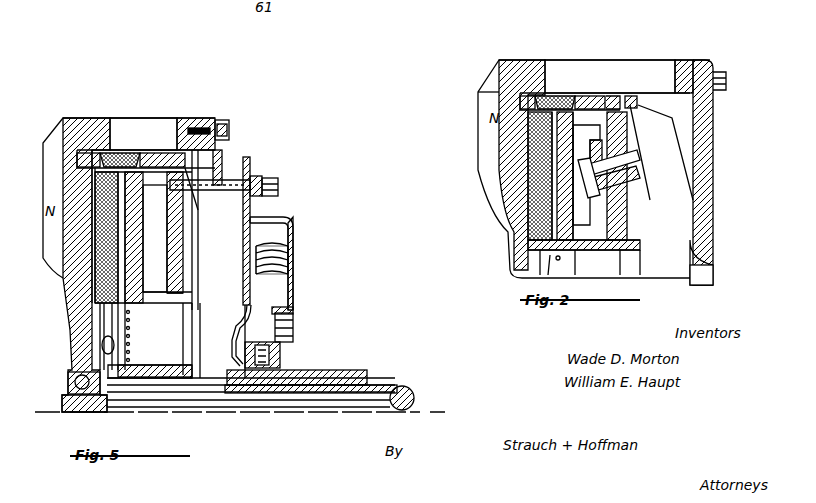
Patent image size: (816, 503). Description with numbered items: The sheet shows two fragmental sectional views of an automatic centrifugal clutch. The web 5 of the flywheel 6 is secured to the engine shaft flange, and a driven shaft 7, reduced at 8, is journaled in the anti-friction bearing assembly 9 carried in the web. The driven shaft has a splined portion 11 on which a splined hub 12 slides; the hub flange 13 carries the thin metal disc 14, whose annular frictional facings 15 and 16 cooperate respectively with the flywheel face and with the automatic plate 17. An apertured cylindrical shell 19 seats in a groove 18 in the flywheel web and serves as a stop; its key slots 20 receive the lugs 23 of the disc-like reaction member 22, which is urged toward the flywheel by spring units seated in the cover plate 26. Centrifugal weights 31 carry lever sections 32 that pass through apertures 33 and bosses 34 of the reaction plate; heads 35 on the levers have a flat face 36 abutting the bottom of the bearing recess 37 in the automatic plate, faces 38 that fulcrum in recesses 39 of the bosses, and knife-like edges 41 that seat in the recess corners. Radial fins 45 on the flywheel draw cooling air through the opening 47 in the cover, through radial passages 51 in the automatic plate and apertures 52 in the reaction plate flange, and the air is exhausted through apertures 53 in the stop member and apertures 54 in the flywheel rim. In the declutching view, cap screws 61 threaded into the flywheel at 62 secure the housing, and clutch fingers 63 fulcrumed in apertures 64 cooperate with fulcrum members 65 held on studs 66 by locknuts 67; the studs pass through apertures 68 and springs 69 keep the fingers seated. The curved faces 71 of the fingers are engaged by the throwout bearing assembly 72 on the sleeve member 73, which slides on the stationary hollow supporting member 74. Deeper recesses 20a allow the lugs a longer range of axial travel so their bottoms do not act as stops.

In FIG. 5, the web 5 is at (75, 258).
In FIG. 2, the web 5 is at (506, 235).
In FIG. 5, the flywheel 6 is at (80, 120).
In FIG. 2, the flywheel 6 is at (522, 76).
In FIG. 5, the driven shaft 7 is at (300, 405).
In FIG. 5, the reduced portion 8 is at (92, 403).
In FIG. 5, the anti-friction bearing assembly 9 is at (76, 382).
In FIG. 5, the splined portion 11 is at (195, 403).
In FIG. 5, the hub 12 is at (160, 367).
In FIG. 5, the flange 13 is at (116, 343).
In FIG. 5, the disc 14 is at (100, 188).
In FIG. 2, the disc 14 is at (520, 215).
In FIG. 5, the frictional facing 15 is at (100, 213).
In FIG. 2, the frictional facing 15 is at (530, 126).
In FIG. 5, the frictional facing 16 is at (100, 232).
In FIG. 2, the frictional facing 16 is at (540, 142).
In FIG. 5, the automatic plate 17 is at (128, 307).
In FIG. 5, the groove 18 is at (66, 153).
In FIG. 2, the groove 18 is at (520, 99).
In FIG. 5, the shell 19 is at (76, 163).
In FIG. 2, the shell 19 is at (520, 108).
In FIG. 2, the key slots 20 is at (604, 97).
In FIG. 5, the recesses 20a is at (160, 150).
In FIG. 5, the reaction member 22 is at (183, 300).
In FIG. 5, the lugs 23 is at (180, 132).
In FIG. 2, the lugs 23 is at (625, 93).
In FIG. 2, the cover plate 26 is at (705, 185).
In FIG. 2, the centrifugal weights 31 is at (700, 125).
In FIG. 2, the lever sections 32 is at (636, 160).
In FIG. 2, the apertures 33 is at (630, 178).
In FIG. 2, the bosses 34 is at (612, 133).
In FIG. 2, the heads 35 is at (545, 170).
In FIG. 2, the flat face 36 is at (528, 188).
In FIG. 2, the bearing recess 37 is at (528, 203).
In FIG. 2, the faces 38 is at (622, 193).
In FIG. 2, the recesses 39 is at (590, 250).
In FIG. 2, the knife-like edges 41 is at (528, 158).
In FIG. 2, the radial fins 45 is at (496, 92).
In FIG. 2, the opening 47 is at (712, 265).
In FIG. 5, the radial passages 51 is at (155, 238).
In FIG. 2, the radial passages 51 is at (565, 267).
In FIG. 5, the apertures 52 is at (200, 185).
In FIG. 2, the apertures 52 is at (640, 100).
In FIG. 5, the apertures 53 is at (120, 158).
In FIG. 2, the apertures 53 is at (552, 100).
In FIG. 5, the apertures 54 is at (118, 130).
In FIG. 2, the apertures 54 is at (600, 75).
In FIG. 5, the cap screws 61 is at (230, 127).
In FIG. 5, the threaded portion 62 is at (208, 120).
In FIG. 5, the clutch fingers 63 is at (272, 242).
In FIG. 5, the apertures 64 is at (270, 219).
In FIG. 5, the fulcrum members 65 is at (254, 180).
In FIG. 5, the studs 66 is at (246, 200).
In FIG. 5, the locknuts 67 is at (276, 182).
In FIG. 5, the apertures 68 is at (222, 170).
In FIG. 5, the springs 69 is at (290, 258).
In FIG. 5, the curved faces 71 is at (234, 332).
In FIG. 5, the throwout bearing assembly 72 is at (280, 350).
In FIG. 5, the sleeve member 73 is at (300, 372).
In FIG. 5, the supporting member 74 is at (400, 388).